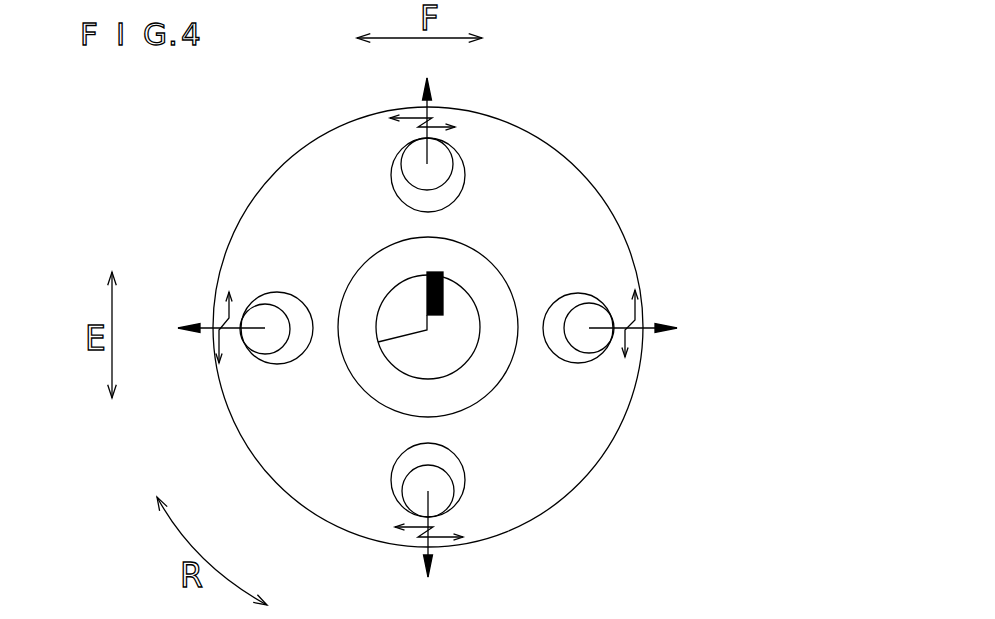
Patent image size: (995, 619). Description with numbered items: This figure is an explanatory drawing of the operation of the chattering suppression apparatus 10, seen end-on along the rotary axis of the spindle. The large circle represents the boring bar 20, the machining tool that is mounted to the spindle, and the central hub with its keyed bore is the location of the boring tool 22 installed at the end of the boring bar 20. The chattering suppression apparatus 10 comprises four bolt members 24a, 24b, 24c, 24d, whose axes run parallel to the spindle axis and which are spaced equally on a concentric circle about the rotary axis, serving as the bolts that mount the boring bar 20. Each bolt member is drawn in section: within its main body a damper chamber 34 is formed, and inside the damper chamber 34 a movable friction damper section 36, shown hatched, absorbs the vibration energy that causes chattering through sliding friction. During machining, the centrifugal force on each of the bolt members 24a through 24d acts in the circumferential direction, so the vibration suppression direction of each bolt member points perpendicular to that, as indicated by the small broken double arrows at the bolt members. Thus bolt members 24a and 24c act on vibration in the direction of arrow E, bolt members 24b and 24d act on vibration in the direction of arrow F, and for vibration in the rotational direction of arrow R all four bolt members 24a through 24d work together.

The chattering suppression apparatus 10 is at (653, 83).
The boring bar 20 is at (477, 284).
The boring tool 22 is at (437, 275).
The bolt member 24a is at (602, 298).
The bolt member 24b is at (457, 508).
The bolt member 24c is at (247, 357).
The bolt member 24d is at (453, 145).
The damper chamber 34 is at (391, 178).
The movable friction damper section 36 is at (401, 160).